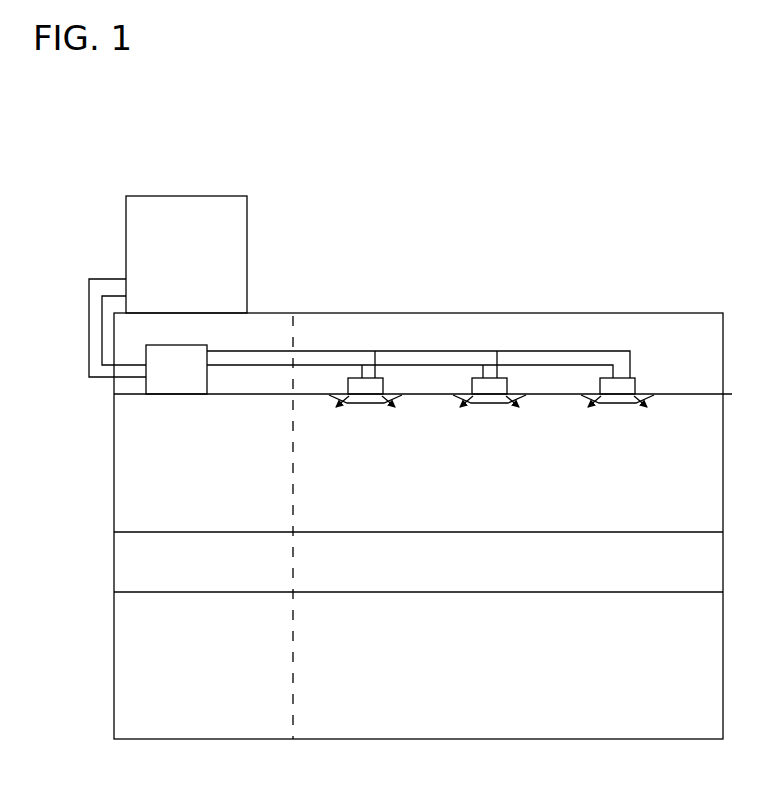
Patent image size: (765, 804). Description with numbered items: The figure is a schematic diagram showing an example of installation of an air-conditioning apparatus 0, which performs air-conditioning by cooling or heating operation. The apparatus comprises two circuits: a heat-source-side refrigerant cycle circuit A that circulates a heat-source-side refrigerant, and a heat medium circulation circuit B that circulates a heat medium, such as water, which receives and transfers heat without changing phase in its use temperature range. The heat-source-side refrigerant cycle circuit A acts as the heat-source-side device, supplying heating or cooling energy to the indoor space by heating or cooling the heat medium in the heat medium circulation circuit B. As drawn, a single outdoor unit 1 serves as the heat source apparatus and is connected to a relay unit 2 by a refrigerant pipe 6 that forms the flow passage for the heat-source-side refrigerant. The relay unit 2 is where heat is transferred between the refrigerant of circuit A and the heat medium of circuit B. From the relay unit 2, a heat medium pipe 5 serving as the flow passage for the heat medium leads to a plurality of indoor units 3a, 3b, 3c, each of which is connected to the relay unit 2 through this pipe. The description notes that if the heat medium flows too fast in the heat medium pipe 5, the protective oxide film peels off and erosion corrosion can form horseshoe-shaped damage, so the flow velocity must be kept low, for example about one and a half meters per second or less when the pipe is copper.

The air-conditioning apparatus 0 is at (284, 179).
The outdoor unit 1 is at (247, 233).
The relay unit 2 is at (158, 345).
The indoor unit 3a is at (363, 405).
The indoor unit 3b is at (503, 405).
The indoor unit 3c is at (618, 405).
The heat medium pipe 5 is at (537, 365).
The refrigerant pipe 6 is at (88, 312).
The heat-source-side refrigerant cycle circuit A is at (76, 347).
The heat medium circulation circuit B is at (408, 345).